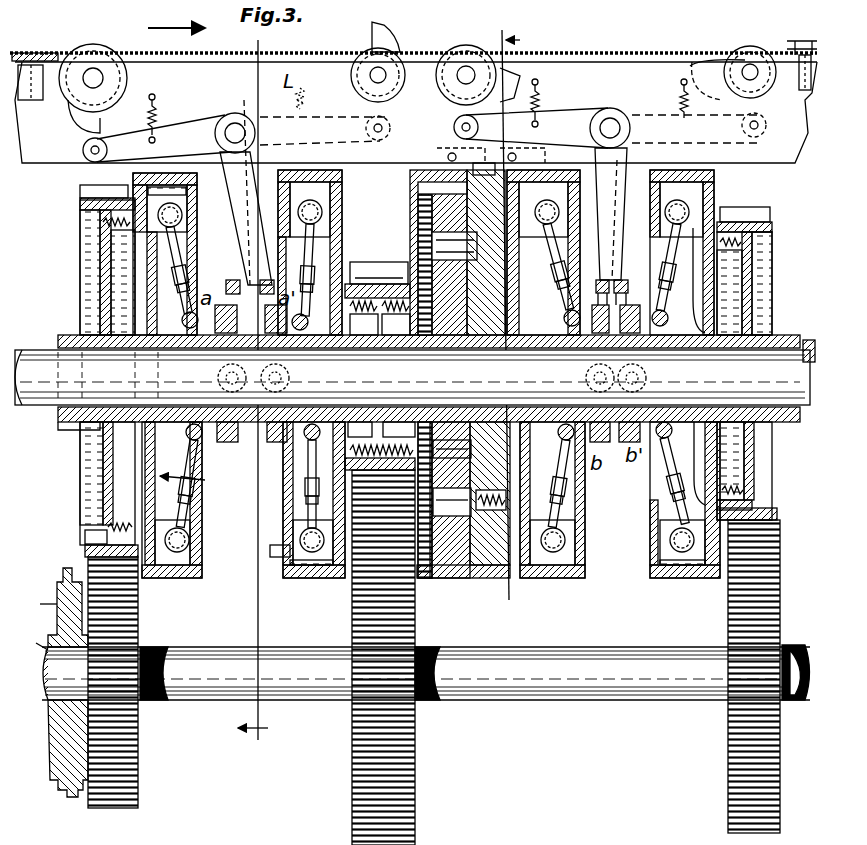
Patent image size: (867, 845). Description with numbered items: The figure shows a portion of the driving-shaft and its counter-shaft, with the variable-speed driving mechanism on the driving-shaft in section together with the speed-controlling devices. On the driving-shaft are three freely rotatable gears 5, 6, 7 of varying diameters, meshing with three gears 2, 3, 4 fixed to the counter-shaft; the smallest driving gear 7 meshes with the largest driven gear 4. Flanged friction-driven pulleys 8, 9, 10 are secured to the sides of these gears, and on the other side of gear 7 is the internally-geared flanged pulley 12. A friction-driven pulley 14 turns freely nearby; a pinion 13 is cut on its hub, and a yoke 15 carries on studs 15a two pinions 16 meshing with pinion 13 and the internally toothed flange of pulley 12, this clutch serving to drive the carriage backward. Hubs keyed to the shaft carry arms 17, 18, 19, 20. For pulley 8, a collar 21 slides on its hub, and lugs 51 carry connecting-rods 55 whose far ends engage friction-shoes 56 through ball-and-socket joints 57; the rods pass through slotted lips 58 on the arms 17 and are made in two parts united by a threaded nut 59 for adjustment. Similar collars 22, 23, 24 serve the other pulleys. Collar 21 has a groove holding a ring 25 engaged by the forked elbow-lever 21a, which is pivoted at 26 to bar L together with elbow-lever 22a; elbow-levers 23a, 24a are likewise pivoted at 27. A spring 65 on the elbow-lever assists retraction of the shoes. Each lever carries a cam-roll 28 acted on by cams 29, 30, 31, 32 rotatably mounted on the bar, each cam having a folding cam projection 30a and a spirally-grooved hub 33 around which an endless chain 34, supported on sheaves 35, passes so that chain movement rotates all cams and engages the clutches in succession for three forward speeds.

The gear 2 is at (138, 733).
The gear 3 is at (728, 750).
The gear 4 is at (352, 740).
The gear 5 is at (88, 230).
The gear 6 is at (788, 460).
The gear 7 is at (358, 272).
The flanged friction-driven pulley 8 is at (186, 258).
The flanged friction-driven pulley 9 is at (696, 578).
The flanged friction-driven pulley 10 is at (338, 200).
The internally-geared flanged pulley 12 is at (432, 578).
The pinion 13 is at (480, 255).
The friction-driven pulley 14 is at (560, 578).
The yoke 15 is at (492, 578).
The stud 15a is at (446, 616).
The pinion 16 is at (440, 205).
The arm 17 is at (197, 487).
The arm 18 is at (305, 500).
The arm 19 is at (560, 500).
The arm 20 is at (668, 486).
The collar 21 is at (224, 444).
The elbow-lever 21a is at (224, 120).
The collar 22 is at (276, 444).
The elbow-lever 22a is at (164, 138).
The collar 23 is at (598, 300).
The elbow-lever 23a is at (600, 200).
The collar 24 is at (628, 300).
The elbow-lever 24a is at (537, 112).
The ring 25 is at (248, 442).
The pivot pin 26 is at (238, 120).
The pivot pin 27 is at (613, 124).
The cam-roll 28 is at (83, 150).
The cam 29 is at (95, 50).
The cam 30 is at (472, 47).
The cam projection 30a is at (528, 42).
The cam 31 is at (362, 52).
The cam 32 is at (728, 46).
The spirally-grooved hub 33 is at (110, 78).
The chain 34 is at (625, 40).
The sheave 35 is at (32, 56).
The lug 51 is at (150, 350).
The connecting-rod 55 is at (183, 300).
The friction-shoe 56 is at (338, 200).
The ball-and-socket joint 57 is at (105, 195).
The lip 58 is at (150, 245).
The threaded nut 59 is at (175, 270).
The spring 65 is at (148, 120).